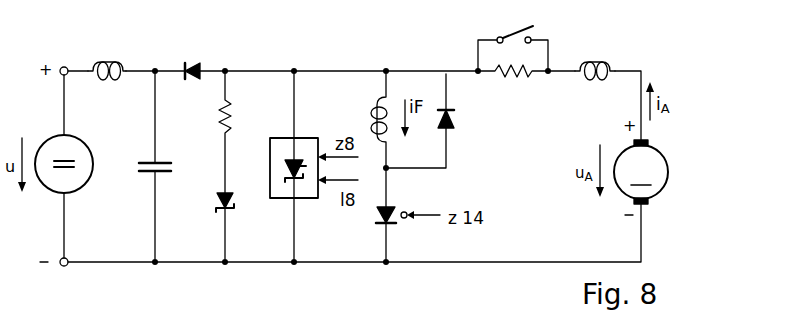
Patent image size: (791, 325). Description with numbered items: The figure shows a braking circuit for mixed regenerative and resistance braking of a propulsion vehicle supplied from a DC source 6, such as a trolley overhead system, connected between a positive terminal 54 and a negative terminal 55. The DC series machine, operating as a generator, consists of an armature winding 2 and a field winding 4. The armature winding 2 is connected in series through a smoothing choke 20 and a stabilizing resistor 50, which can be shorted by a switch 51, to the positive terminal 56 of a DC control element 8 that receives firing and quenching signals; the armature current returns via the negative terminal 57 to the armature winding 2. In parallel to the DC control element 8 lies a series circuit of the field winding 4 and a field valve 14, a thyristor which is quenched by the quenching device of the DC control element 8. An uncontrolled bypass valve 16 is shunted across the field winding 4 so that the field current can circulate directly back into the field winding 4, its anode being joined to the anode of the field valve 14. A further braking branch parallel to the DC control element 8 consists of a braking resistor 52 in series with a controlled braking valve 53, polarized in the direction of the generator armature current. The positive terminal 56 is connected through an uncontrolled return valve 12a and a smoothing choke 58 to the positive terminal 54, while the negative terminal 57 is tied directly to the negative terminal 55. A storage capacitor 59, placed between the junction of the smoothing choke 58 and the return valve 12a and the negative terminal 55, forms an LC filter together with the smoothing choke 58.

The armature winding 2 is at (665, 190).
The field winding 4 is at (376, 118).
The DC source 6 is at (86, 148).
The DC control element 8 is at (270, 168).
The return valve 12a is at (196, 63).
The field valve 14 is at (378, 219).
The bypass valve 16 is at (455, 119).
The smoothing choke 20 is at (597, 80).
The stabilizing resistor 50 is at (502, 78).
The switch 51 is at (514, 30).
The braking resistor 52 is at (229, 110).
The braking valve 53 is at (218, 208).
The positive terminal 54 is at (68, 59).
The negative terminal 55 is at (66, 273).
The positive terminal 56 is at (294, 70).
The negative terminal 57 is at (294, 263).
The smoothing choke 58 is at (122, 62).
The storage capacitor 59 is at (152, 174).